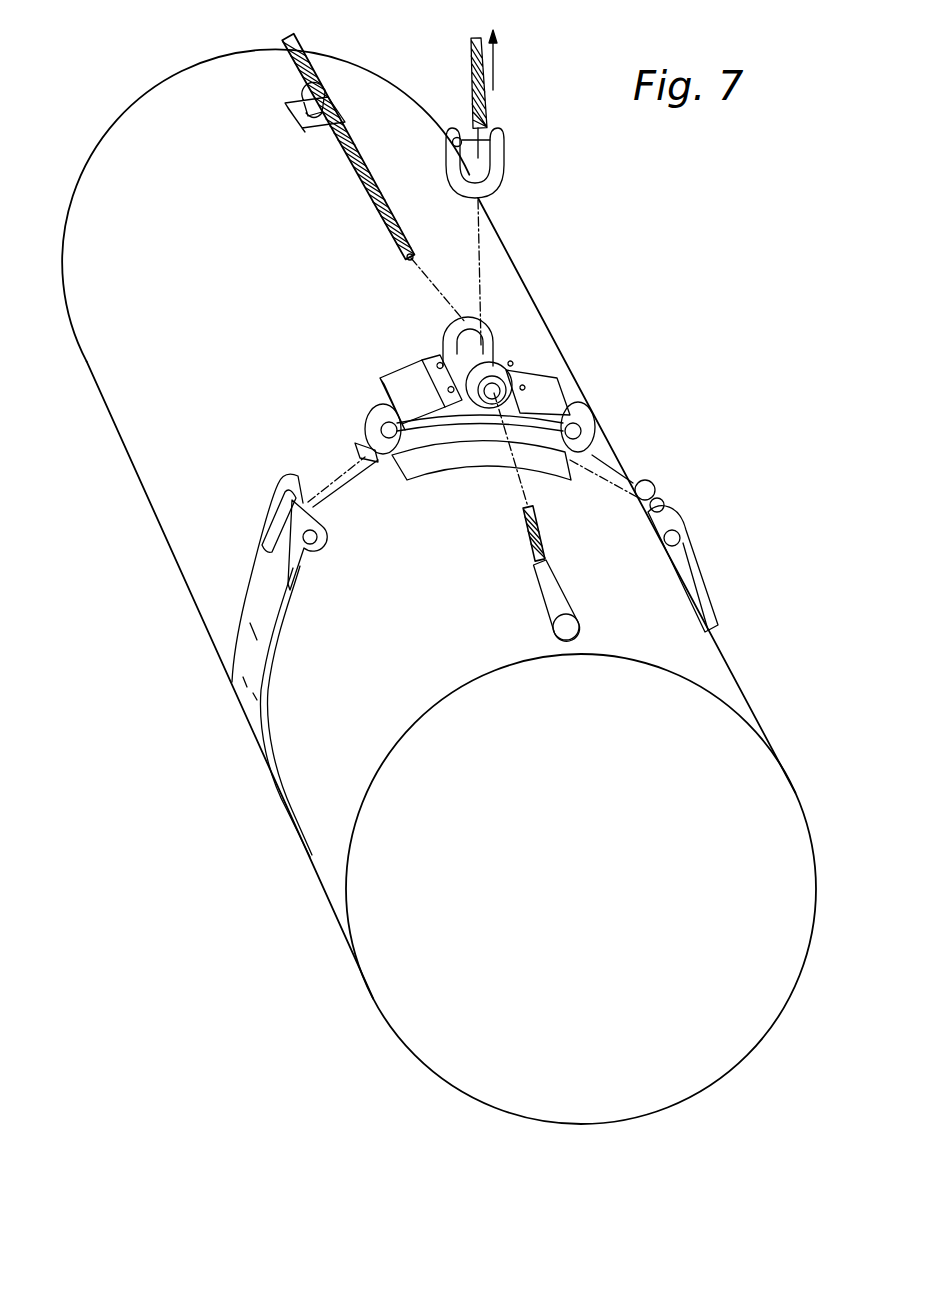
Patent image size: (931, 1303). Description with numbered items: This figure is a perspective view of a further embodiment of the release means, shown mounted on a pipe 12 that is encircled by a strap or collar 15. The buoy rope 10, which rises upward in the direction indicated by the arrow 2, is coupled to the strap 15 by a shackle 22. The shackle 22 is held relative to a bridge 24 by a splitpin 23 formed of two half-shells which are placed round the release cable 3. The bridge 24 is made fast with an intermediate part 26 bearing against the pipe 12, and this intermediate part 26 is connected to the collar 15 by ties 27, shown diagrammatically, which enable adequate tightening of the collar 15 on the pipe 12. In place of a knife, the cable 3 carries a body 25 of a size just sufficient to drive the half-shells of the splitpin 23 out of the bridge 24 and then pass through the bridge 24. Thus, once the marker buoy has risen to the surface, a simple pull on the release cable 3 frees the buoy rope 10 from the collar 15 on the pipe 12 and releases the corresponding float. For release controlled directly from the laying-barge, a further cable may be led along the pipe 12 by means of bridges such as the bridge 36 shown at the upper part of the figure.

The lifting direction 2 is at (503, 60).
The release cable 3 is at (360, 202).
The buoy rope 10 is at (470, 55).
The pipe 12 is at (170, 508).
The strap 15 is at (247, 640).
The shackle 22 is at (502, 182).
The splitpin 23 is at (477, 397).
The bridge 24 is at (450, 328).
The body 25 is at (546, 612).
The intermediate part 26 is at (400, 380).
The ties 27 is at (335, 473).
The bridge 36 is at (303, 93).